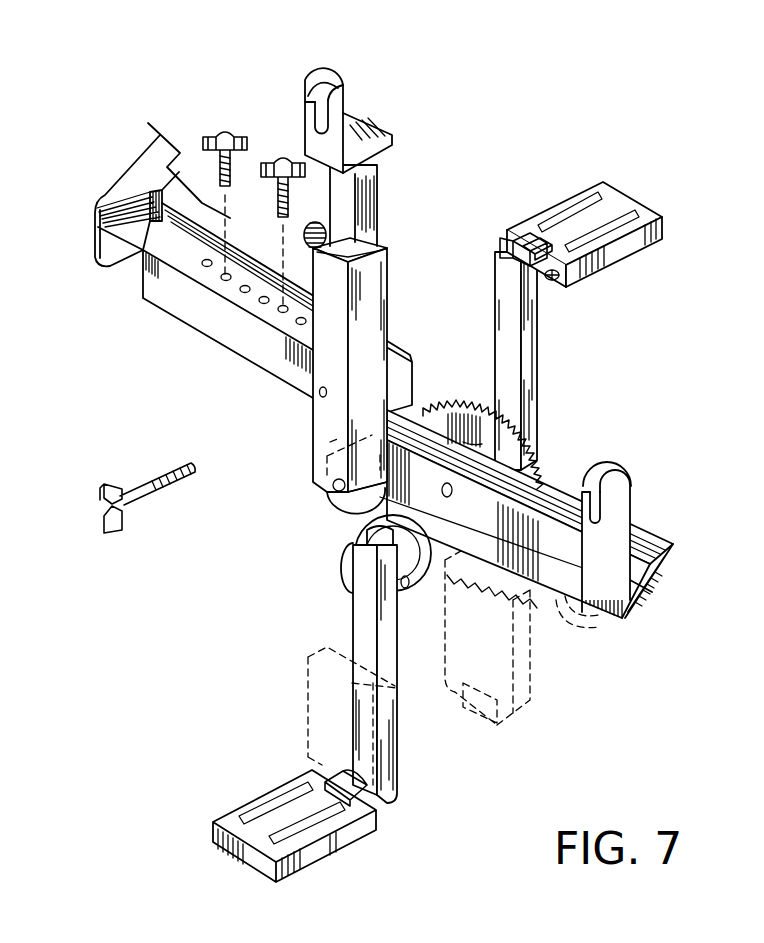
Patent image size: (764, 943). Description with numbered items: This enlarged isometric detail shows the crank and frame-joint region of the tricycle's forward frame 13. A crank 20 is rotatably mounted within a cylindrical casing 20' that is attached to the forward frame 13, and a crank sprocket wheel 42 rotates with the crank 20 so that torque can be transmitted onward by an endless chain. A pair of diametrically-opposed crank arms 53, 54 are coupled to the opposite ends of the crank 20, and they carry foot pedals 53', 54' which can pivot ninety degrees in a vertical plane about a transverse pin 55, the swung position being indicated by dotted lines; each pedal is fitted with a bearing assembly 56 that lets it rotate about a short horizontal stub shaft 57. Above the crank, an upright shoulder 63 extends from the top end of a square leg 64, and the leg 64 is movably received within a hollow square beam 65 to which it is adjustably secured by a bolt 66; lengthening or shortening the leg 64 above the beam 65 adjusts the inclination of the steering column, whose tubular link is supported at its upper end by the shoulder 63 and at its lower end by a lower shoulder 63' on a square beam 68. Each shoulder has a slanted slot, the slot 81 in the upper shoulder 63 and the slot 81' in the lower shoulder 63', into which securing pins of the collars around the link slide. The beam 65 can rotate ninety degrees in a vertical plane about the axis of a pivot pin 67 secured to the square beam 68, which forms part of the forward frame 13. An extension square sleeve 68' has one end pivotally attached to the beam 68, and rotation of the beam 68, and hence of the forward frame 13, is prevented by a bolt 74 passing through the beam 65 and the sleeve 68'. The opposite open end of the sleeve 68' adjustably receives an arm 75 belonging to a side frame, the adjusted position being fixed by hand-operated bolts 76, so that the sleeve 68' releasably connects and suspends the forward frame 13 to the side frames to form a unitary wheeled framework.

The forward frame 13 is at (645, 532).
The crank 20 is at (302, 574).
The cylindrical casing 20' is at (347, 553).
The crank sprocket wheel 42 is at (457, 406).
The crank arm 53 is at (477, 357).
The foot pedal 53' is at (583, 434).
The crank arm 54 is at (305, 674).
The foot pedal 54' is at (267, 764).
The transverse pin 55 is at (562, 276).
The bearing assembly 56 is at (532, 258).
The stub shaft 57 is at (515, 242).
The upright shoulder 63 is at (394, 120).
The lower shoulder 63' is at (642, 491).
The square leg 64 is at (368, 183).
The hollow square beam 65 is at (316, 373).
The bolt 66 is at (318, 246).
The pivot pin 67 is at (336, 488).
The square beam 68 is at (526, 486).
The extension square sleeve 68' is at (235, 307).
The bolt 74 is at (140, 493).
The arm 75 is at (113, 193).
The hand-operated bolts 76 is at (285, 160).
The slanted slot 81 is at (271, 100).
The slanted slot 81' is at (594, 469).